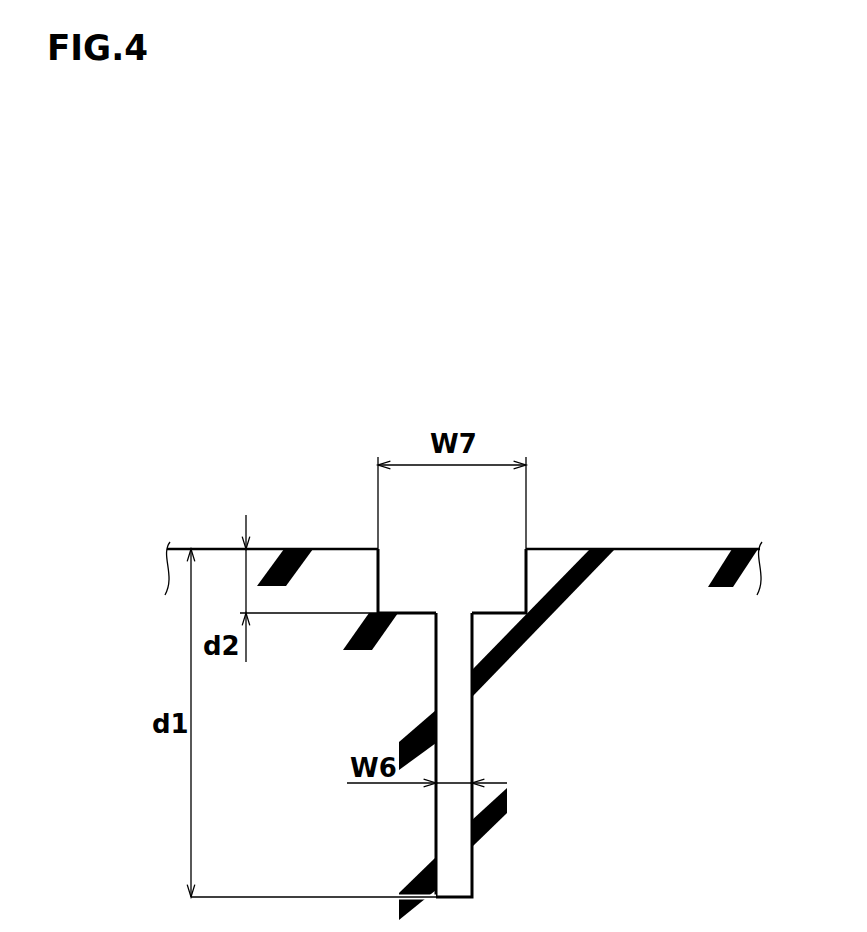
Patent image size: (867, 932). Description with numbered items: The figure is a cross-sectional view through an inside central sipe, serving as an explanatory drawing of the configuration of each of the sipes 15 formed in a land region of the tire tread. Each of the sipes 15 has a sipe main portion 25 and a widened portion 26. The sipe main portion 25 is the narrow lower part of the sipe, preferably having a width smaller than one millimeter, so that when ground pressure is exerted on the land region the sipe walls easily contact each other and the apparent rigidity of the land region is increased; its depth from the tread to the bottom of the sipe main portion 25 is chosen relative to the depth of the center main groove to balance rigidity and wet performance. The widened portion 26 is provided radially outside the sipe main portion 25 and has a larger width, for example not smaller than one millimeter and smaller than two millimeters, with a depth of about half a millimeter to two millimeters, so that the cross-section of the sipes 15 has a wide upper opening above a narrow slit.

The sipe 15 is at (566, 723).
The widened portion 26 is at (483, 585).
The sipe main portion 25 is at (452, 752).